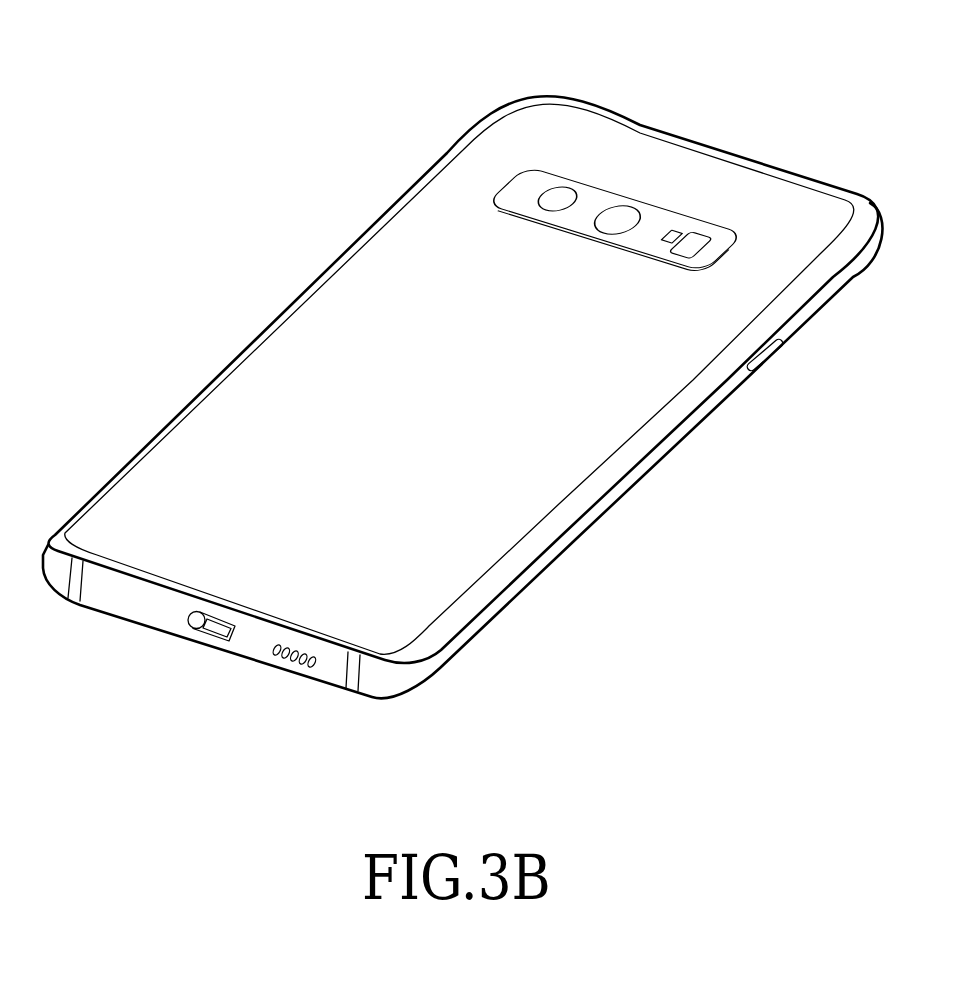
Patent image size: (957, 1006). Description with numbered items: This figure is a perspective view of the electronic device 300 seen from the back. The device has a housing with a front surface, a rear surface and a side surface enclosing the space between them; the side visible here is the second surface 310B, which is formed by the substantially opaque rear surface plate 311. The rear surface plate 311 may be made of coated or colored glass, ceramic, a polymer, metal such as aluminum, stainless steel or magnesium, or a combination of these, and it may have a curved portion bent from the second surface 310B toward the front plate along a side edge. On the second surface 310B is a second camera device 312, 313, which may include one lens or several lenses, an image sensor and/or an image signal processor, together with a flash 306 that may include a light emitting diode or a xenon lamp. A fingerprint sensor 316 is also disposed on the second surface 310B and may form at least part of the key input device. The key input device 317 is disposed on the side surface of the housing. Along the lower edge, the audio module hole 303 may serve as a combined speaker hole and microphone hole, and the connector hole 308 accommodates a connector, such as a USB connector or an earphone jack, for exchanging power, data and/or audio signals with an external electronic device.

The electronic device 300 is at (327, 172).
The audio module hole 303 is at (297, 664).
The flash 306 is at (669, 229).
The connector hole 308 is at (208, 628).
The second surface 310B is at (276, 365).
The rear surface plate 311 is at (213, 456).
The second camera device 312 is at (618, 215).
The second camera device 313 is at (562, 188).
The fingerprint sensor 316 is at (704, 234).
The key input device 317 is at (768, 353).